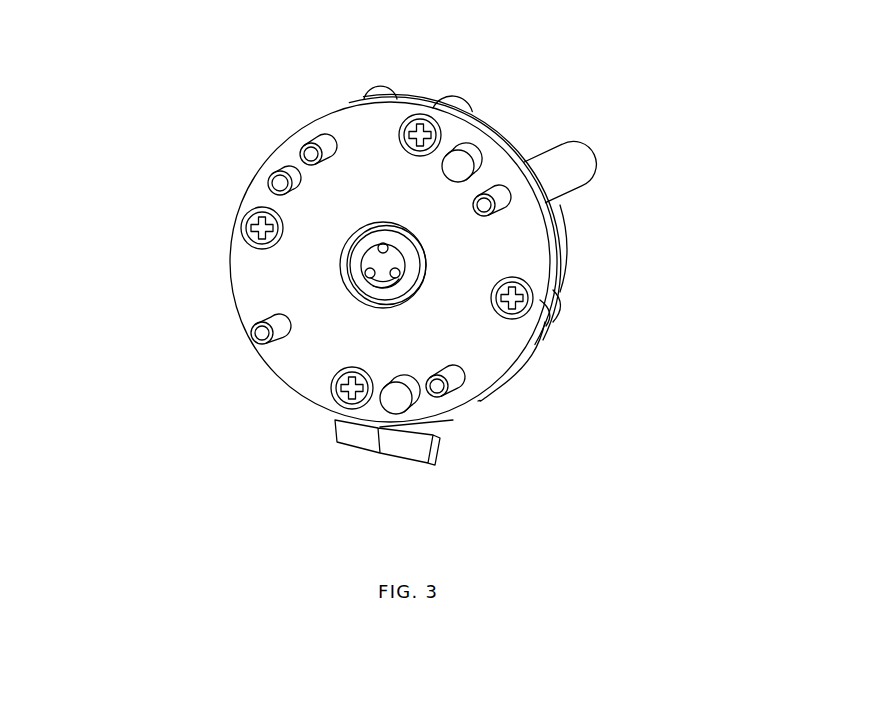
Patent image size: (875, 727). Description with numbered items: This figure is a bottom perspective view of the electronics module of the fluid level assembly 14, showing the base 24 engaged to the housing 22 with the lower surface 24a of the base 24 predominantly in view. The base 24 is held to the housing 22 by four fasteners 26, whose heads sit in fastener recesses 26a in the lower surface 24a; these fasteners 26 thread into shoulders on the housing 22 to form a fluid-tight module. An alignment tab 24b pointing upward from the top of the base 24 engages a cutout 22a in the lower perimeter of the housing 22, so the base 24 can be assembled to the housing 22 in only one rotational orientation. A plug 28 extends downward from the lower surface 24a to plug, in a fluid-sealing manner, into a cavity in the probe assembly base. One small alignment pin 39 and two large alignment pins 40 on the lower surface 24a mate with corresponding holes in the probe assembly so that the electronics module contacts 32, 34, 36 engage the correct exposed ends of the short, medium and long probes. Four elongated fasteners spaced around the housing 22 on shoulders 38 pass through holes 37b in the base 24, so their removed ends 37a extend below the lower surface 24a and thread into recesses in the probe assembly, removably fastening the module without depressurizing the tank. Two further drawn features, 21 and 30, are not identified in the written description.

The fluid level assembly 14 is at (645, 200).
The hex nut 21 is at (430, 465).
The housing 22 is at (485, 108).
The cutout 22a is at (553, 292).
The base 24 is at (333, 113).
The lower surface 24a is at (380, 227).
The alignment tab 24b is at (550, 310).
The fasteners 26 is at (530, 292).
The fastener recesses 26a is at (517, 325).
The plug 28 is at (341, 263).
The connector keyway 30 is at (380, 283).
The electronics module contact 32 is at (385, 248).
The electronics module contact 34 is at (368, 273).
The electronics module contact 36 is at (397, 275).
The removed ends of fasteners 37a is at (311, 154).
The holes 37b is at (267, 315).
The shoulders 38 is at (566, 165).
The small alignment pin 39 is at (267, 181).
The large alignment pins 40 is at (475, 150).